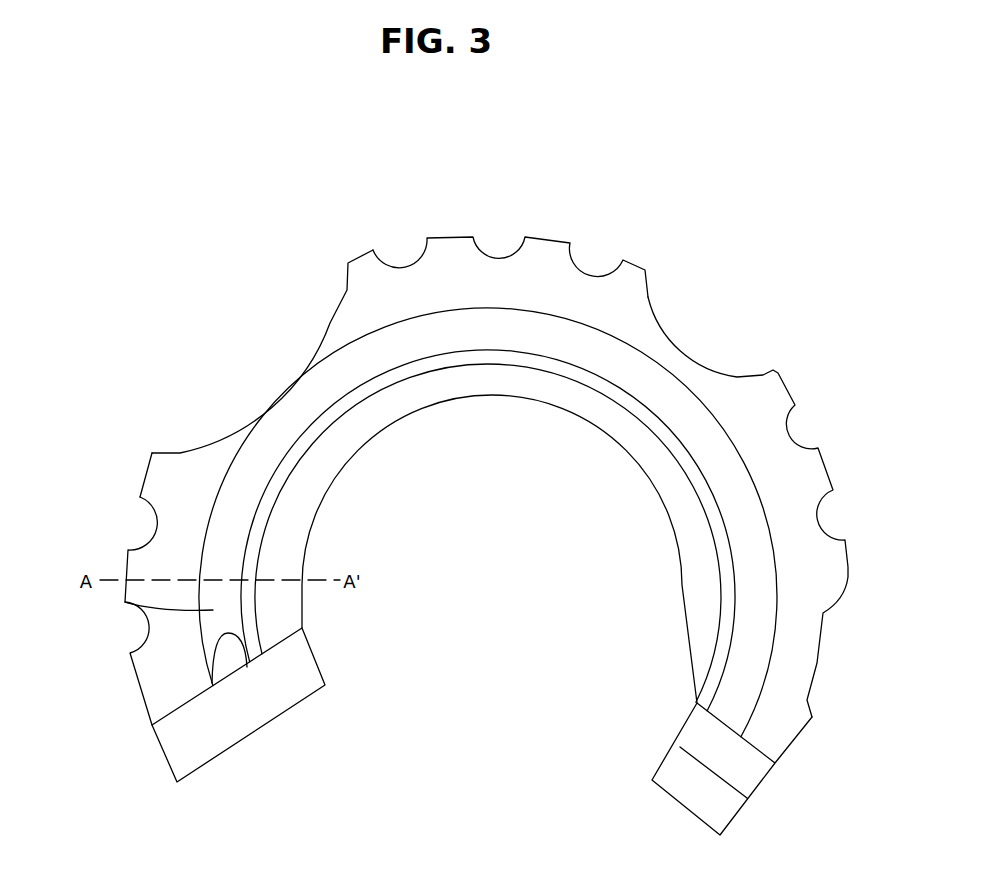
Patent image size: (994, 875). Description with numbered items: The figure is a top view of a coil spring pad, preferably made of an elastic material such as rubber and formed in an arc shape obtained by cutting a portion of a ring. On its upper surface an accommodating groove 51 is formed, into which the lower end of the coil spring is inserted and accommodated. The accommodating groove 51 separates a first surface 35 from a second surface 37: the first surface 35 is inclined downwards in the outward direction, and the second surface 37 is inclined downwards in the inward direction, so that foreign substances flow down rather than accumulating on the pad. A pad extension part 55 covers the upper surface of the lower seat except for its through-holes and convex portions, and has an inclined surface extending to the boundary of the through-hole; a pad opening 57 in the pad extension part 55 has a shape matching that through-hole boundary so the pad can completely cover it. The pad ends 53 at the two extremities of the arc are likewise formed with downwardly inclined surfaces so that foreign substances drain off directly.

The first surface 35 is at (233, 430).
The second surface 37 is at (290, 520).
The accommodating groove 51 is at (150, 610).
The pad ends 53 is at (240, 717).
The pad extension part 55 is at (342, 237).
The pad opening 57 is at (787, 437).